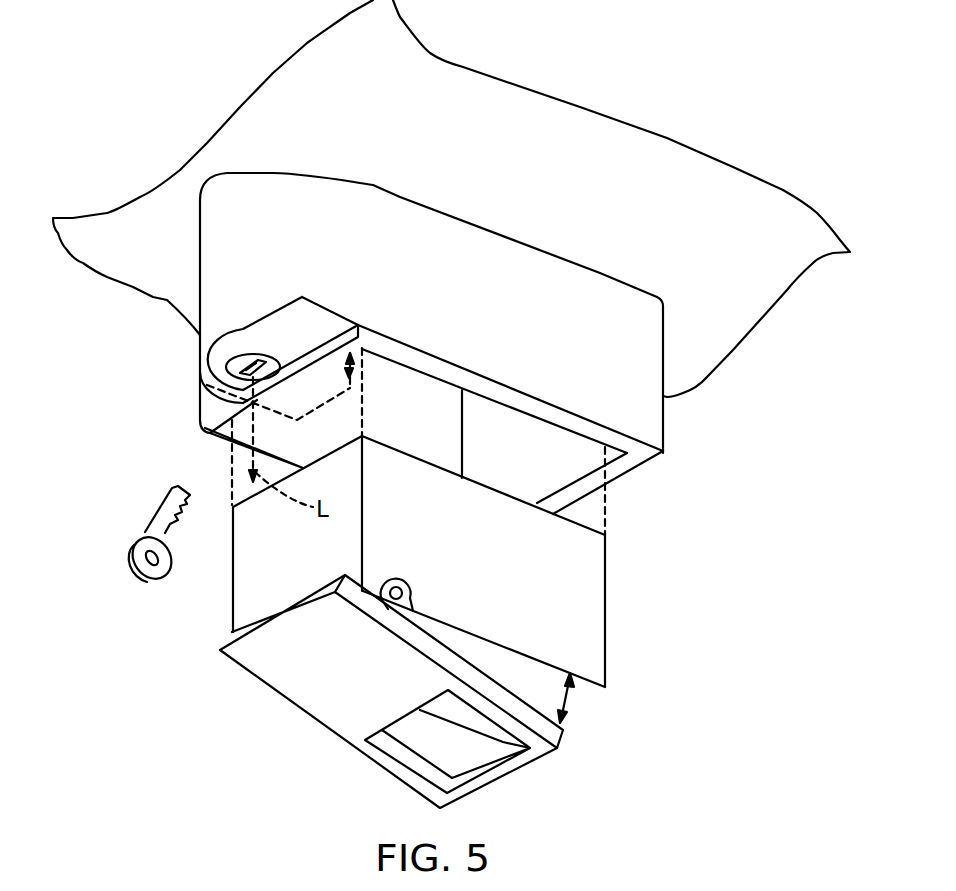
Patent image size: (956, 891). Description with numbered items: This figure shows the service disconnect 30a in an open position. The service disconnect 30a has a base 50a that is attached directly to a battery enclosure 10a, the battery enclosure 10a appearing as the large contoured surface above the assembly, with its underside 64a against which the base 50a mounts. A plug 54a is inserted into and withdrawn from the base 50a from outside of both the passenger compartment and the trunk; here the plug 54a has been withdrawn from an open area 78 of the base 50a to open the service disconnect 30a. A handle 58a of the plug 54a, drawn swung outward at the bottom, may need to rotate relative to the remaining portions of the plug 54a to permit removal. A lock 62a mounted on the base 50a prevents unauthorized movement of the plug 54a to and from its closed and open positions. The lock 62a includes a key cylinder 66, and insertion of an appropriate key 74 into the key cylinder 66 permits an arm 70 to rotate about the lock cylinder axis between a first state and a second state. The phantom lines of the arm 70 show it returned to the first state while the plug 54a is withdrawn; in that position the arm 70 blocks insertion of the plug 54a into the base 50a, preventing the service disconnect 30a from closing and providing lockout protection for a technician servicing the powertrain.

The battery enclosure 10a is at (463, 78).
The underside of work surface 64a is at (565, 128).
The service disconnect 30a is at (580, 263).
The base 50a is at (648, 413).
The open area 78 is at (568, 462).
The arm 70 is at (330, 315).
The key cylinder 66 is at (248, 357).
The lock 62a is at (191, 440).
The plug 54a is at (593, 588).
The handle 58a is at (507, 705).
The key 74 is at (167, 580).